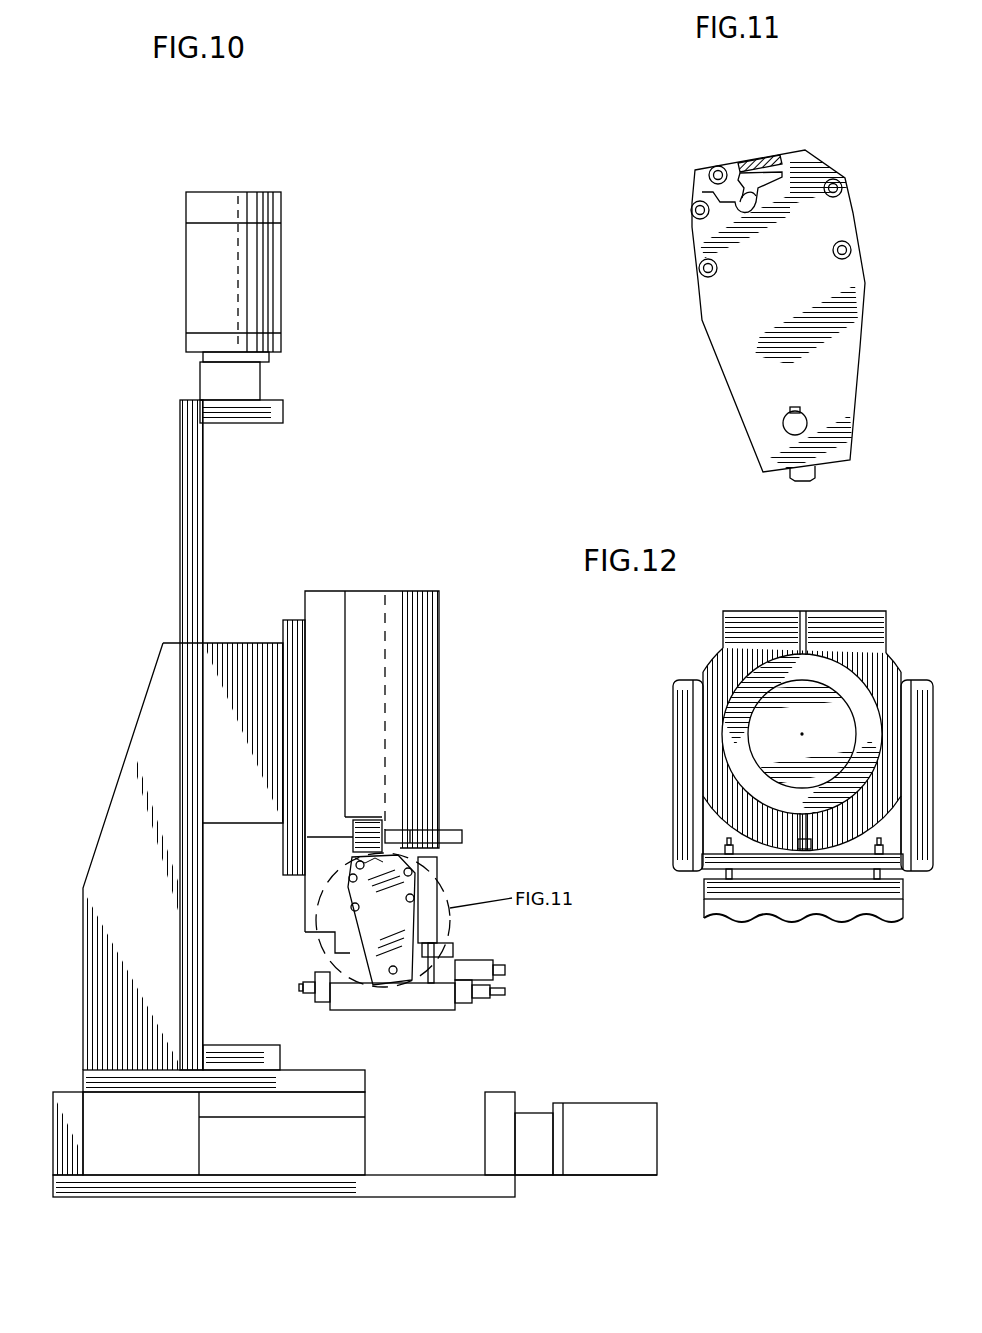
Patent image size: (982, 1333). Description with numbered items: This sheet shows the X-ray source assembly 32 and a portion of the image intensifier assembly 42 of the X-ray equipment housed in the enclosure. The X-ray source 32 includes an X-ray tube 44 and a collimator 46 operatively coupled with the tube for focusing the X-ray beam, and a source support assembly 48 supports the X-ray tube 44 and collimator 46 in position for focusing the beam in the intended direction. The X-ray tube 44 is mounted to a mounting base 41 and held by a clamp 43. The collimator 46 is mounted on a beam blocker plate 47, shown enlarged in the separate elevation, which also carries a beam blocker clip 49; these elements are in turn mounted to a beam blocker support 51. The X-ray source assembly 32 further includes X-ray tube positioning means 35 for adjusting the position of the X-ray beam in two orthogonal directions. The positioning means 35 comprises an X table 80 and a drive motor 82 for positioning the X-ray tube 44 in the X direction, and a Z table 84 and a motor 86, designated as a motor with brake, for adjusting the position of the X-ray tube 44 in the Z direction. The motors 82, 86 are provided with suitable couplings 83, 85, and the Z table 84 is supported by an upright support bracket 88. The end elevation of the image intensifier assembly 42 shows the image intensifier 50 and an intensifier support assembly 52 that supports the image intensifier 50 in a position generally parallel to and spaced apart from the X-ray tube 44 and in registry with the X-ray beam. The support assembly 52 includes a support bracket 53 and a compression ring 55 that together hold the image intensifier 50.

In FIG. 10, the X-ray source 32 is at (126, 537).
In FIG. 10, the X-ray tube positioning means 35 is at (421, 1118).
In FIG. 10, the mounting base 41 is at (323, 590).
In FIG. 12, the image intensifier assembly 42 is at (686, 640).
In FIG. 10, the clamp 43 is at (290, 622).
In FIG. 10, the X-ray tube 44 is at (381, 670).
In FIG. 11, the collimator 46 is at (745, 160).
In FIG. 10, the beam blocker plate 47 is at (386, 927).
In FIG. 11, the beam blocker plate 47 is at (722, 305).
In FIG. 10, the source support assembly 48 is at (229, 536).
In FIG. 11, the beam blocker clip 49 is at (757, 158).
In FIG. 12, the image intensifier 50 is at (770, 736).
In FIG. 10, the beam blocker support 51 is at (464, 945).
In FIG. 12, the intensifier support assembly 52 is at (781, 926).
In FIG. 12, the support bracket 53 is at (921, 680).
In FIG. 12, the compression ring 55 is at (826, 632).
In FIG. 10, the X table 80 is at (238, 1181).
In FIG. 10, the drive motor 82 is at (635, 1104).
In FIG. 10, the coupling 83 is at (535, 1112).
In FIG. 10, the Z table 84 is at (185, 462).
In FIG. 10, the coupling 85 is at (245, 385).
In FIG. 10, the motor 86 is at (267, 285).
In FIG. 10, the upright support bracket 88 is at (130, 762).